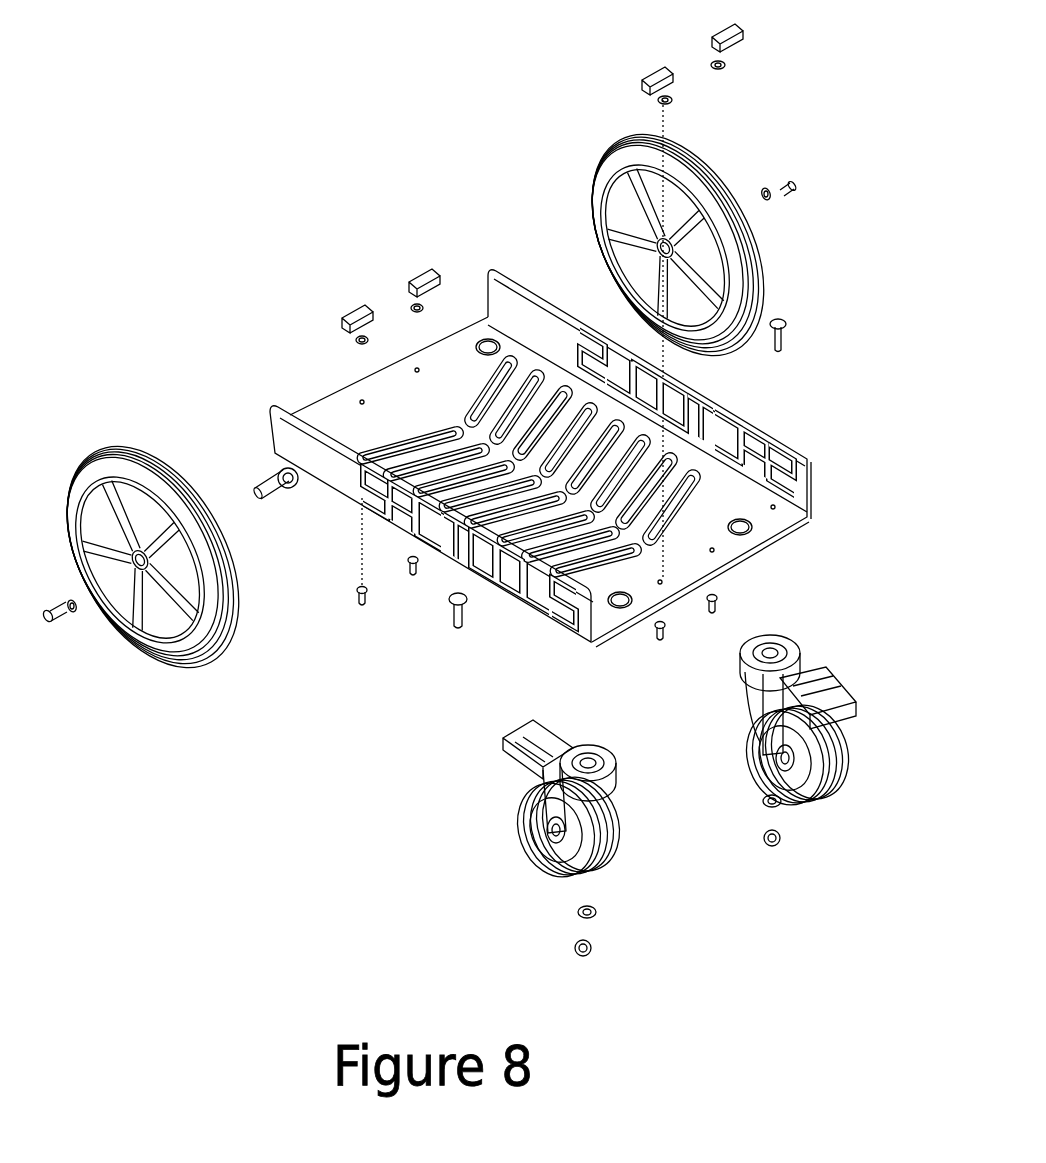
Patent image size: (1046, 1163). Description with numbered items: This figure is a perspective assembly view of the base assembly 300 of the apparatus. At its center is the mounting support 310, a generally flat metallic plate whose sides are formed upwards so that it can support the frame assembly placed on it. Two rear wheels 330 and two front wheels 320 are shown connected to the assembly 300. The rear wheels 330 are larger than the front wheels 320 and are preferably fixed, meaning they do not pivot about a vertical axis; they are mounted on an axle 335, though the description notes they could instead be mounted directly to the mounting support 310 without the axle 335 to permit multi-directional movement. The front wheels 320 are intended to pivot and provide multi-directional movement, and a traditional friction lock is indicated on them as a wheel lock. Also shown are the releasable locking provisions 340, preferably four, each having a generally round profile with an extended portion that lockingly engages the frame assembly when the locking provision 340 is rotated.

The base assembly 300 is at (288, 775).
The mounting support 310 is at (279, 395).
The front wheels 320 is at (522, 827).
The rear wheels 330 is at (137, 655).
The axle 335 is at (285, 492).
The releasable locking provision 340 is at (408, 270).